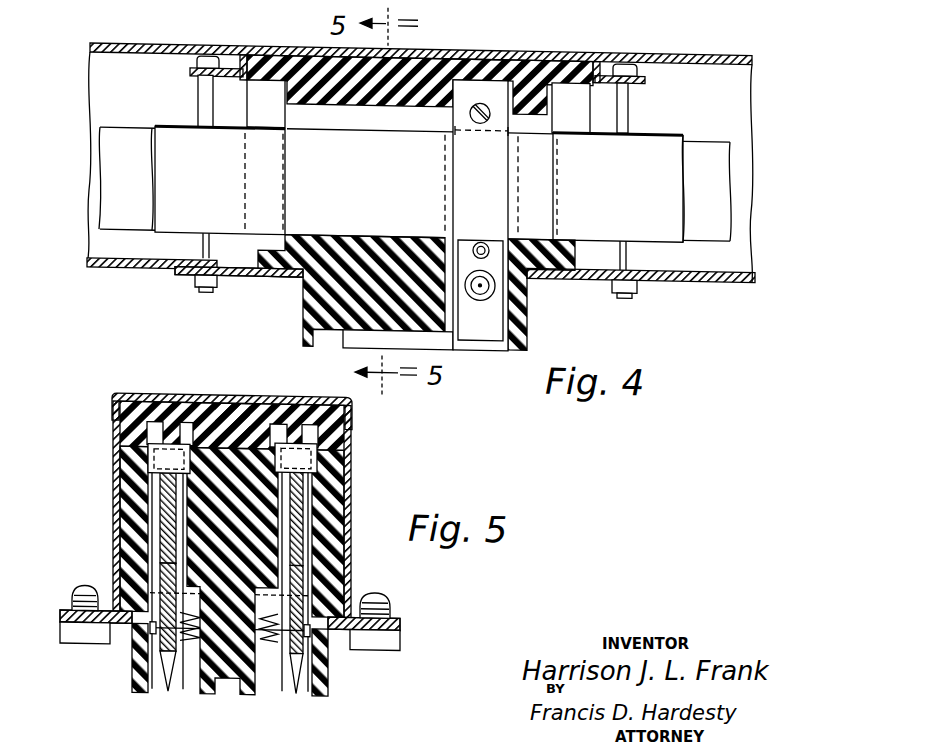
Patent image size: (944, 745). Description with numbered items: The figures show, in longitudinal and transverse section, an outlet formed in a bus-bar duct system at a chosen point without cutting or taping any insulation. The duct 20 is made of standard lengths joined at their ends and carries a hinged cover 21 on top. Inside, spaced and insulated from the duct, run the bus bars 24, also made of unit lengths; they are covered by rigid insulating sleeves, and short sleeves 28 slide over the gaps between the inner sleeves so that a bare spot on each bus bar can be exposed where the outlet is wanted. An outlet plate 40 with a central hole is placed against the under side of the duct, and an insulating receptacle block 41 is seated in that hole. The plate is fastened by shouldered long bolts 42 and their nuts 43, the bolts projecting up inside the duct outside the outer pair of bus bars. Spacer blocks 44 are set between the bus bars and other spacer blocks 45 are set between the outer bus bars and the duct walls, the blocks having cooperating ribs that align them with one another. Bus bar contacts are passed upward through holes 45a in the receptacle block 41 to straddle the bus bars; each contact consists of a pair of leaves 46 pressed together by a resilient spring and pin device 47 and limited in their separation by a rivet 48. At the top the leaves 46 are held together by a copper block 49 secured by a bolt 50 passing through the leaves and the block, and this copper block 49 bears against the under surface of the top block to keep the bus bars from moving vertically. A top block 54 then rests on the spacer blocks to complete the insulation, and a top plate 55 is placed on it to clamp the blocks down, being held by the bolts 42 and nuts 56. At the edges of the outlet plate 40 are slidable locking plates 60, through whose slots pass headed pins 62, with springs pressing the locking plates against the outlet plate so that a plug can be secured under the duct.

In FIG. 4, the duct 20 is at (720, 270).
In FIG. 5, the duct 20 is at (118, 440).
In FIG. 4, the hinged cover 21 is at (734, 44).
In FIG. 5, the hinged cover 21 is at (148, 394).
In FIG. 4, the bus bars 24 is at (759, 160).
In FIG. 4, the short sleeves 28 is at (757, 181).
In FIG. 4, the outlet plate 40 is at (270, 274).
In FIG. 5, the outlet plate 40 is at (62, 619).
In FIG. 4, the insulating receptacle block 41 is at (305, 308).
In FIG. 5, the insulating receptacle block 41 is at (228, 676).
In FIG. 4, the long bolts 42 is at (198, 99).
In FIG. 4, the nuts 43 is at (195, 280).
In FIG. 4, the spacer blocks 44 is at (419, 177).
In FIG. 5, the spacer blocks 44 is at (250, 405).
In FIG. 5, the spacer blocks 45 is at (130, 480).
In FIG. 4, the holes 45a is at (528, 308).
In FIG. 5, the holes 45a is at (146, 660).
In FIG. 4, the contact leaves 46 is at (480, 302).
In FIG. 5, the contact leaves 46 is at (294, 690).
In FIG. 5, the spring and pin device 47 is at (293, 640).
In FIG. 4, the rivet 48 is at (482, 234).
In FIG. 5, the rivet 48 is at (315, 556).
In FIG. 4, the copper block 49 is at (475, 81).
In FIG. 5, the copper block 49 is at (297, 475).
In FIG. 4, the bolt 50 is at (481, 117).
In FIG. 5, the bolt 50 is at (330, 441).
In FIG. 4, the top block 54 is at (415, 52).
In FIG. 5, the top block 54 is at (218, 406).
In FIG. 4, the top plate 55 is at (565, 52).
In FIG. 5, the top plate 55 is at (291, 395).
In FIG. 4, the nuts 56 is at (640, 55).
In FIG. 5, the locking plates 60 is at (392, 614).
In FIG. 5, the headed pins 62 is at (386, 592).